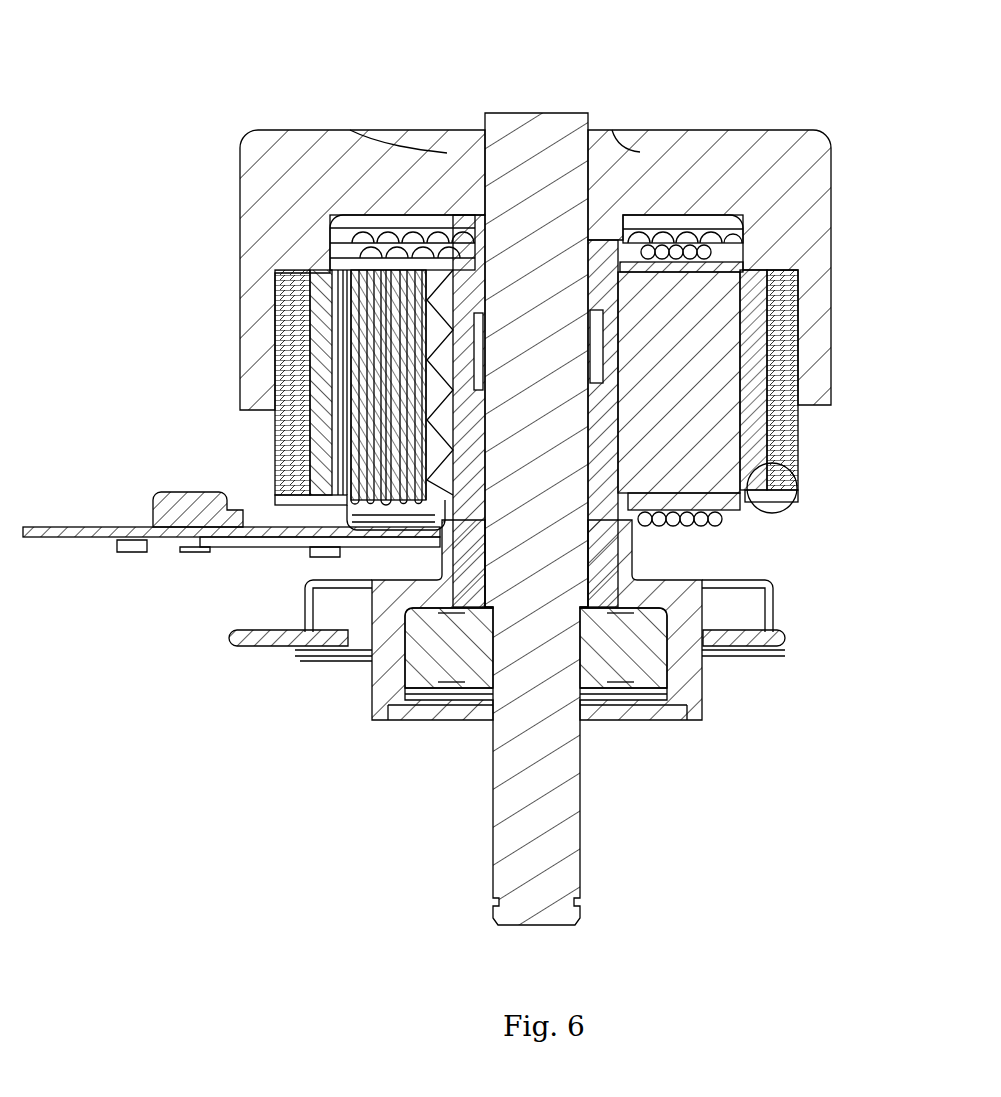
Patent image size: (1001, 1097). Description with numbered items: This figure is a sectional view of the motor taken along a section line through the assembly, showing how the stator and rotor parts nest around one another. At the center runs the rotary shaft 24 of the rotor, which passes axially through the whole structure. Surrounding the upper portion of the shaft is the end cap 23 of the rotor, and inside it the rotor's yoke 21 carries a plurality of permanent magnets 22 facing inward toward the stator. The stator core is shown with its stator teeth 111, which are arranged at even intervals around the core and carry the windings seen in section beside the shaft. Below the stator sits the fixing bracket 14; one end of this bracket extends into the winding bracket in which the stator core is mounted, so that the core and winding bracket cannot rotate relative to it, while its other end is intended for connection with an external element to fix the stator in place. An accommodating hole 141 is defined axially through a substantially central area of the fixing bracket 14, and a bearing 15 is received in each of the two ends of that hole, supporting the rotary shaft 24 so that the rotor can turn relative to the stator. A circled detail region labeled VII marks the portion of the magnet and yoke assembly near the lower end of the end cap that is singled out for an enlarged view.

The fixing bracket 14 is at (690, 680).
The accommodating hole 141 is at (355, 440).
The bearing 15 is at (622, 322).
The yoke 21 is at (777, 377).
The permanent magnets 22 is at (800, 413).
The end cap 23 is at (272, 206).
The rotary shaft 24 is at (522, 855).
The stator teeth 111 is at (710, 295).
The detail circle VII is at (786, 511).